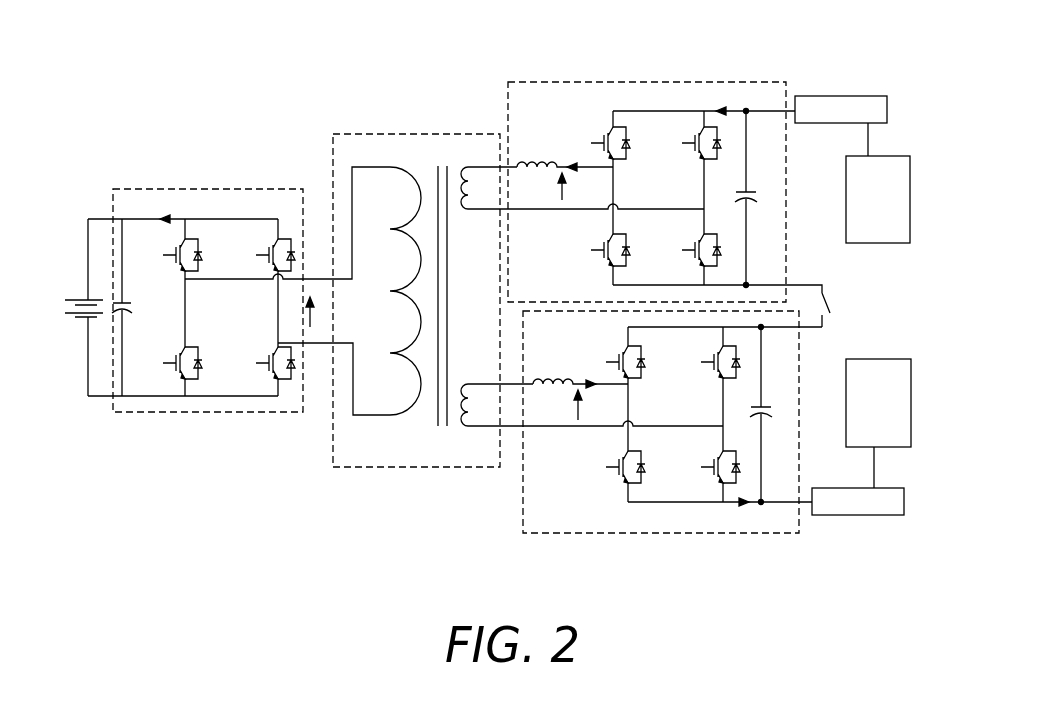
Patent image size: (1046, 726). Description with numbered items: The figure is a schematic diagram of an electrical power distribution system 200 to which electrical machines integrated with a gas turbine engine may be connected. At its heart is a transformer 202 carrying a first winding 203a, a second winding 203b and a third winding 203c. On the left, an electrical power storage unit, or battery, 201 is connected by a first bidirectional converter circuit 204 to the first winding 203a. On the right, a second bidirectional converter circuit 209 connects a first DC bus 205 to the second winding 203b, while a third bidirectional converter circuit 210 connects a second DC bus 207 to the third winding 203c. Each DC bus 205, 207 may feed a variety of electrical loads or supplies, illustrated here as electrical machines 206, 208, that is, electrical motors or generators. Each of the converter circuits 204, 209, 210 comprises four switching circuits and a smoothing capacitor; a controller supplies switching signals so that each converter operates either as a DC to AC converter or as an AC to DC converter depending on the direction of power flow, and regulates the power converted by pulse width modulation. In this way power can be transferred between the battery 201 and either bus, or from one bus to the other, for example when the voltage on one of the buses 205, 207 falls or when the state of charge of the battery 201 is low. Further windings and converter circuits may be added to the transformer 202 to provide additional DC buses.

The electrical power distribution system 200 is at (150, 64).
The electrical power storage unit 201 is at (80, 318).
The transformer 202 is at (416, 306).
The first winding 203a is at (417, 167).
The second winding 203b is at (463, 168).
The third winding 203c is at (467, 427).
The first bidirectional converter circuit 204 is at (194, 189).
The first DC bus 205 is at (837, 96).
The electrical machine 206 is at (878, 183).
The second DC bus 207 is at (862, 515).
The electrical machine 208 is at (878, 423).
The second bidirectional converter circuit 209 is at (541, 82).
The third bidirectional converter circuit 210 is at (565, 534).